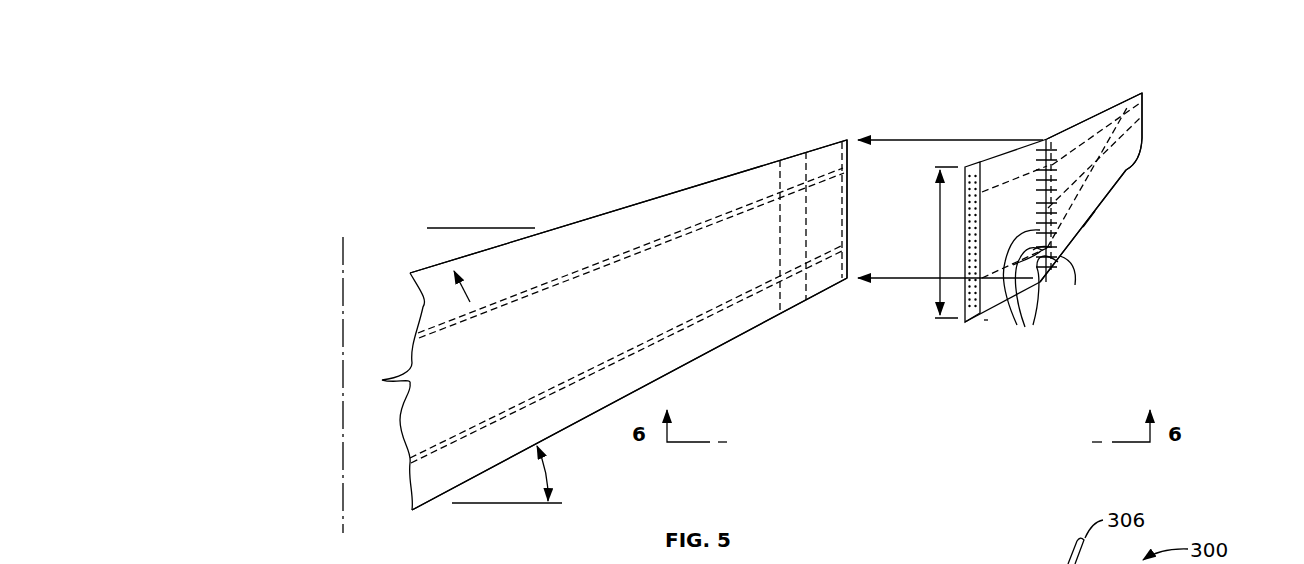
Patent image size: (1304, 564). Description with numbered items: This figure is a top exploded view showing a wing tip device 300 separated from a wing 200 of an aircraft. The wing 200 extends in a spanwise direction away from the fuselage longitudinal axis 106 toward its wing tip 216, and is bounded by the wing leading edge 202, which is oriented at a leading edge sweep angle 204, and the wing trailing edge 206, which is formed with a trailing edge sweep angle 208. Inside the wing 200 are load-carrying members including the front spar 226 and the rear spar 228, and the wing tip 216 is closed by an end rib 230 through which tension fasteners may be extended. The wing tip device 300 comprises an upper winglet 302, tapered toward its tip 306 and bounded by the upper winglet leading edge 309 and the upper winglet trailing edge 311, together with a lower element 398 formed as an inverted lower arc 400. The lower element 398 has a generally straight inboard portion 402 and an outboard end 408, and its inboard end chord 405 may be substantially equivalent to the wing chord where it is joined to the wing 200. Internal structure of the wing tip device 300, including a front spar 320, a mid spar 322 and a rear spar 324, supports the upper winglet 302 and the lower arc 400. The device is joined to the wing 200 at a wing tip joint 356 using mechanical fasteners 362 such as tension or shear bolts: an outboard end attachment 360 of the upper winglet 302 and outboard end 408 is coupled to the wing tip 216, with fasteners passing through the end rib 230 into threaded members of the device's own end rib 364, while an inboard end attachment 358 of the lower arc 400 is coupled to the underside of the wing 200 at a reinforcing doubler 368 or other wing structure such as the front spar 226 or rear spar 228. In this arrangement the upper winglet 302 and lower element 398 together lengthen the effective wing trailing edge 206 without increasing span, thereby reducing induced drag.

The longitudinal axis 106 is at (343, 452).
The wing 200 is at (492, 137).
The wing leading edge 202 is at (685, 367).
The leading edge sweep angle 204 is at (548, 471).
The wing trailing edge 206 is at (578, 220).
The trailing edge sweep angle 208 is at (443, 224).
The wing tip 216 is at (847, 140).
The front spar 226 is at (717, 310).
The rear spar 228 is at (688, 227).
The end rib 230 is at (849, 262).
The wing tip device 300 is at (1206, 80).
The upper winglet 302 is at (1116, 198).
The tip 306 is at (1144, 134).
The upper winglet leading edge 309 is at (1085, 228).
The upper winglet trailing edge 311 is at (1093, 115).
The front spar 320 is at (1118, 176).
The mid spar 322 is at (1130, 142).
The rear spar 324 is at (1128, 104).
The wing tip joint 356 is at (857, 162).
The inboard end attachment 358 is at (976, 322).
The outboard end attachment 360 is at (1045, 140).
The mechanical fasteners 362 is at (1021, 328).
The end rib 364 is at (1075, 285).
The reinforcing doubler 368 is at (777, 158).
The lower element 398 is at (986, 319).
The lower arc 400 is at (1004, 151).
The inboard portion 402 is at (967, 164).
The chord 405 is at (940, 214).
The outboard end 408 is at (1050, 247).